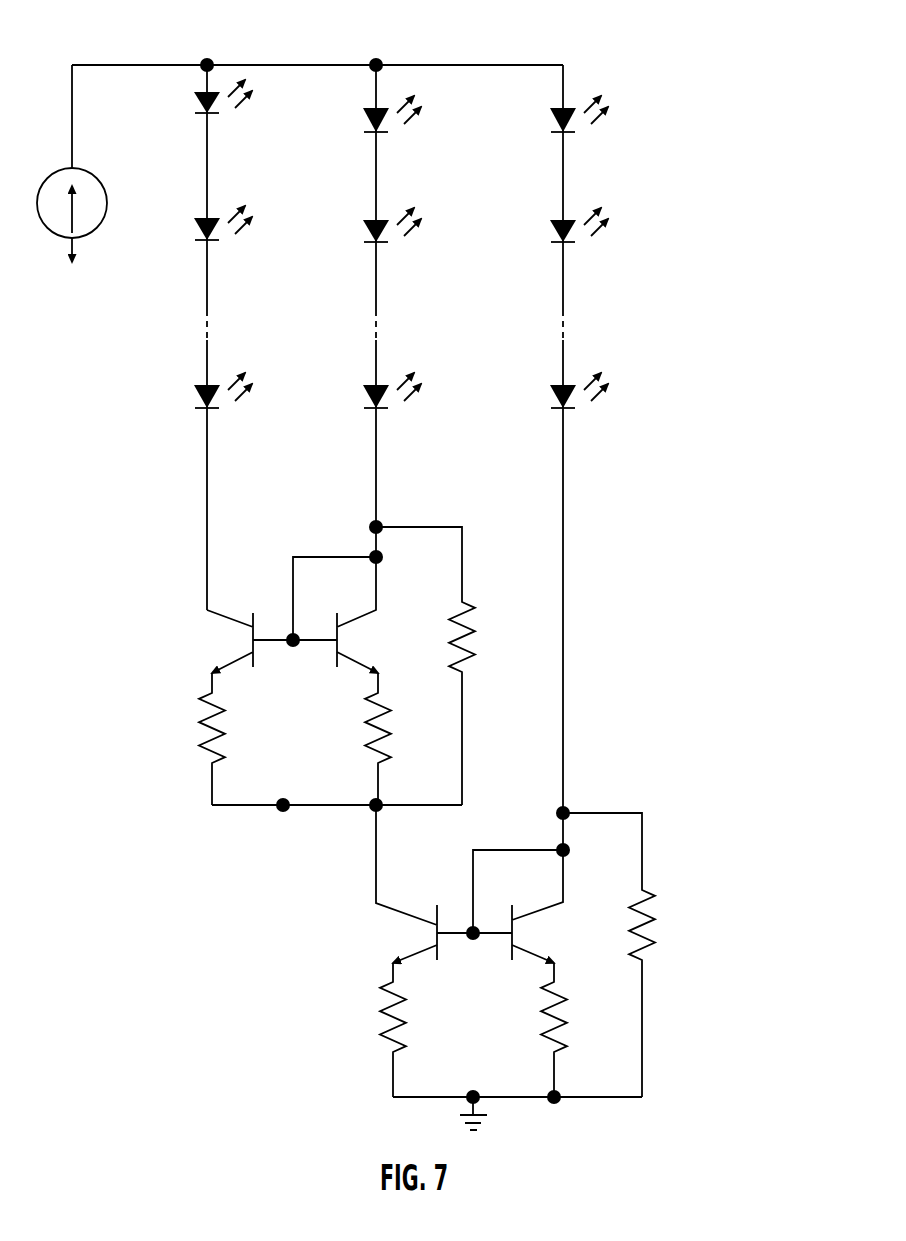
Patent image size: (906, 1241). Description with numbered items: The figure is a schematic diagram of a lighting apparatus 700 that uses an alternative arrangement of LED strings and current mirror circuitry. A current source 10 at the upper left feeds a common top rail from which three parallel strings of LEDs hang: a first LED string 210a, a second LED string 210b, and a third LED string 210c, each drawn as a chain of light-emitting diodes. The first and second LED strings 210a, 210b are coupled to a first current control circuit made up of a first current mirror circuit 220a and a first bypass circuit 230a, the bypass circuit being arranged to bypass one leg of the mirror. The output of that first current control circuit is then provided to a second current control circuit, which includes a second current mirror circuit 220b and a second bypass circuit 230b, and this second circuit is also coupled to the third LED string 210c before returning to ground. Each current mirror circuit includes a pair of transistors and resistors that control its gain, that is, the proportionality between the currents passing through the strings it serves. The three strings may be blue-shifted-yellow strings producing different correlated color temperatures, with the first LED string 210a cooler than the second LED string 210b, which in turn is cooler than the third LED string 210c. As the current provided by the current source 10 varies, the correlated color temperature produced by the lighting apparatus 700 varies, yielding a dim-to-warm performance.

The lighting apparatus 700 is at (657, 102).
The current source 10 is at (97, 232).
The first LED string 210a is at (222, 188).
The second LED string 210b is at (408, 190).
The third LED string 210c is at (610, 190).
The first bypass circuit 230a is at (494, 607).
The second bypass circuit 230b is at (727, 947).
The first current mirror circuit 220a is at (163, 708).
The second current mirror circuit 220b is at (381, 1080).